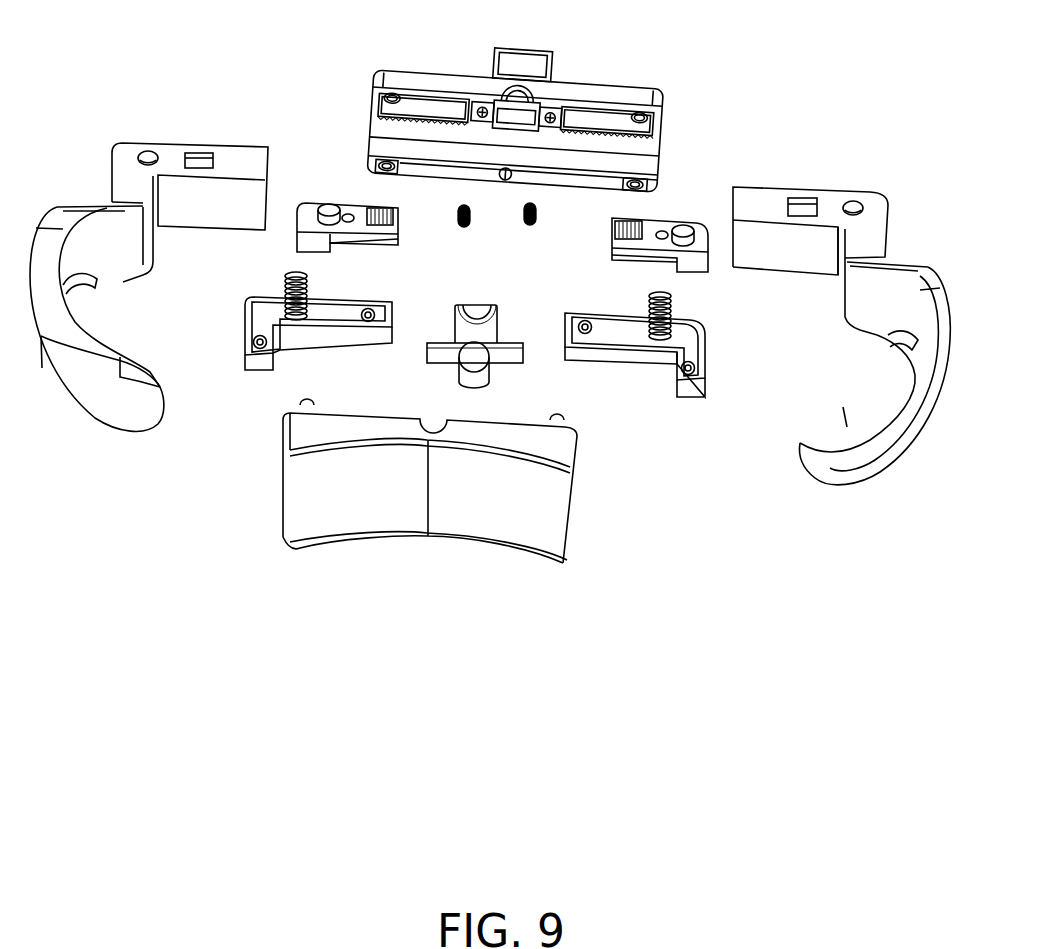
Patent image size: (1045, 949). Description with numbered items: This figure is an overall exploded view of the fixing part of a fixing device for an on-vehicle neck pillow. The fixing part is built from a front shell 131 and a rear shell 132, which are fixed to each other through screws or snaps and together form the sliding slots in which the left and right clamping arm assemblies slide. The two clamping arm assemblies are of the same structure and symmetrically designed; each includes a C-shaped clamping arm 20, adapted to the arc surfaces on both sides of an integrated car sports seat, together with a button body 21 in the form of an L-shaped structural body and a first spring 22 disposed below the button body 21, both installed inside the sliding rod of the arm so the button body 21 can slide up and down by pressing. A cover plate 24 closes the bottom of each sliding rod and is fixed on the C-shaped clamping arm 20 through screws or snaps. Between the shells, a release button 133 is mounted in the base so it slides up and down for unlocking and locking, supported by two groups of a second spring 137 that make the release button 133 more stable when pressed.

The C-shaped clamping arm 20 is at (167, 160).
The button body 21 is at (317, 202).
The first spring 22 is at (286, 284).
The cover plate 24 is at (252, 370).
The front shell 131 is at (614, 93).
The rear shell 132 is at (530, 543).
The release button 133 is at (520, 380).
The second spring 137 is at (526, 225).